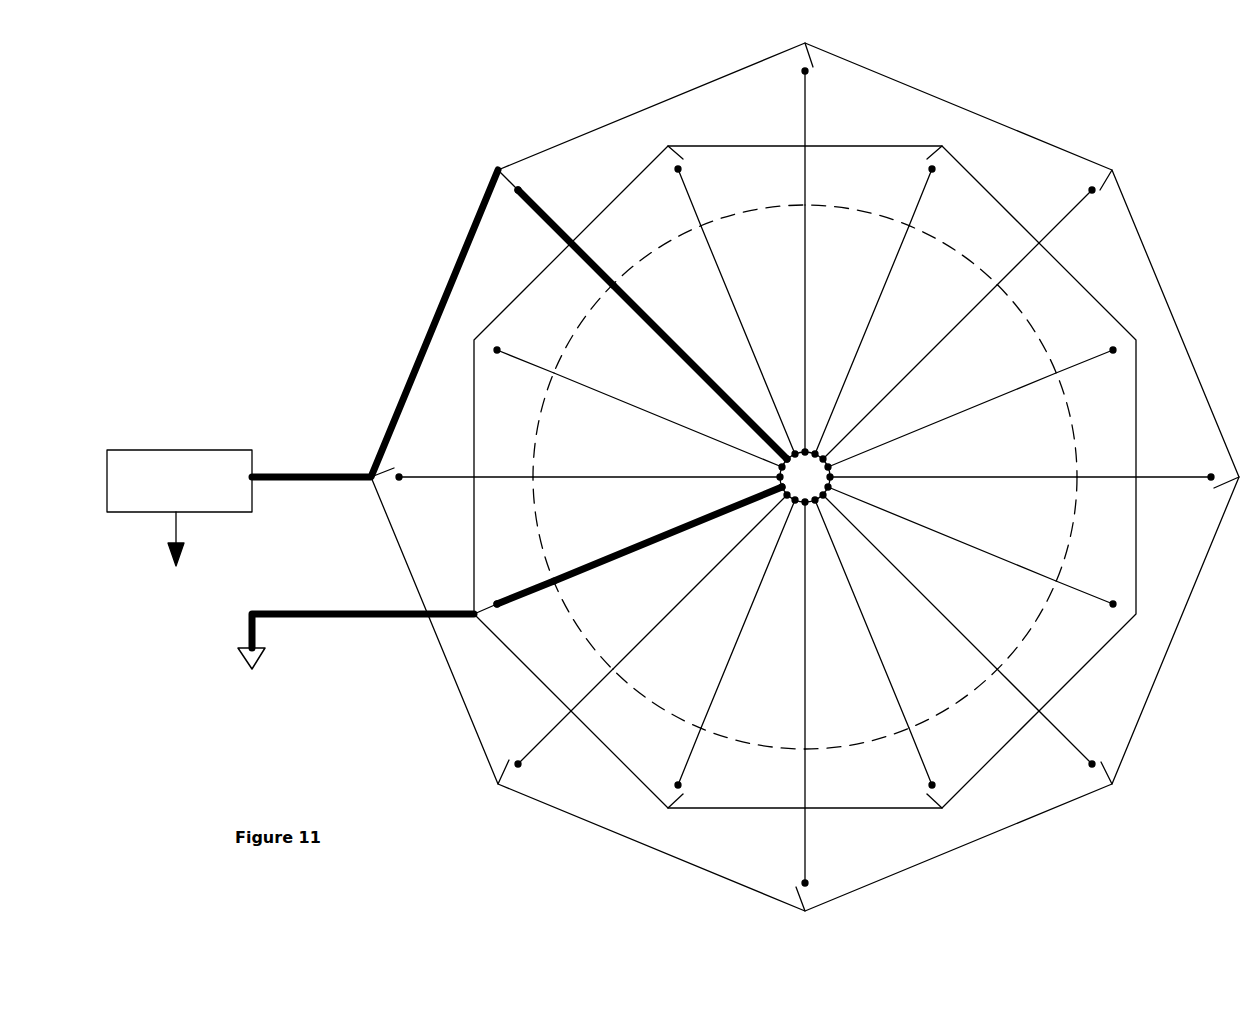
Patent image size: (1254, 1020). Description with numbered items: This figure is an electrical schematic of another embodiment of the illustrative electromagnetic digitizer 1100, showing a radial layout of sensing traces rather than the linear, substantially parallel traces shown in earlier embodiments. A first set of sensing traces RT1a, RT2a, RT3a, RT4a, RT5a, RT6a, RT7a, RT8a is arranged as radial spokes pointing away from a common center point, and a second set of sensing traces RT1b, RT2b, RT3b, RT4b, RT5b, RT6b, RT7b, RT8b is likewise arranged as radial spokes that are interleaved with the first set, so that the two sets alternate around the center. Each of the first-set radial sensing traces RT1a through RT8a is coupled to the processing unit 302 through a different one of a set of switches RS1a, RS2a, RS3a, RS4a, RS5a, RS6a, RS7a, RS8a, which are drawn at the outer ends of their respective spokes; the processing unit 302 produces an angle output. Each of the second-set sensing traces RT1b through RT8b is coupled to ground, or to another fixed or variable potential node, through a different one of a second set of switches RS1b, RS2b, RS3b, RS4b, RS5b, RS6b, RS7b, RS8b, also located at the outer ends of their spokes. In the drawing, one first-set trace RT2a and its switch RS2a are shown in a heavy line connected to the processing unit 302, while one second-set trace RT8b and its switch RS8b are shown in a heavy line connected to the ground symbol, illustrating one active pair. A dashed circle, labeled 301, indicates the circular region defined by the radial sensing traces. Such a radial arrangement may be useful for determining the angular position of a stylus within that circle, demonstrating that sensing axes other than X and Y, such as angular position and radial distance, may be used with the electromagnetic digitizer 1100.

The electromagnetic digitizer 1100 is at (376, 203).
The rotating member (dashed circle) 301 is at (943, 235).
The processing unit 302 is at (164, 504).
The switch RS1a is at (464, 463).
The switch RS1b is at (522, 350).
The switch RS2a is at (555, 227).
The switch RS2b is at (705, 189).
The switch RS3a is at (830, 136).
The switch RS3b is at (905, 189).
The switch RS4a is at (1046, 227).
The switch RS4b is at (1086, 351).
The switch RS5a is at (1148, 465).
The switch RS5b is at (1089, 588).
The switch RS6a is at (1057, 718).
The switch RS6b is at (905, 763).
The switch RS7a is at (829, 817).
The switch RS7b is at (708, 758).
The switch RS8a is at (551, 718).
The switch RS8b is at (514, 591).
The radial sensing trace RT1a is at (658, 469).
The radial sensing trace RT1b is at (669, 415).
The radial sensing trace RT2a is at (701, 372).
The radial sensing trace RT2b is at (749, 341).
The radial sensing trace RT3a is at (828, 330).
The radial sensing trace RT3b is at (877, 341).
The radial sensing trace RT4a is at (914, 373).
The radial sensing trace RT4b is at (940, 421).
The radial sensing trace RT5a is at (952, 469).
The radial sensing trace RT5b is at (940, 532).
The radial sensing trace RT6a is at (913, 580).
The radial sensing trace RT6b is at (878, 612).
The radial sensing trace RT7a is at (827, 624).
The radial sensing trace RT7b is at (749, 612).
The radial sensing trace RT8a is at (695, 580).
The radial sensing trace RT8b is at (669, 532).